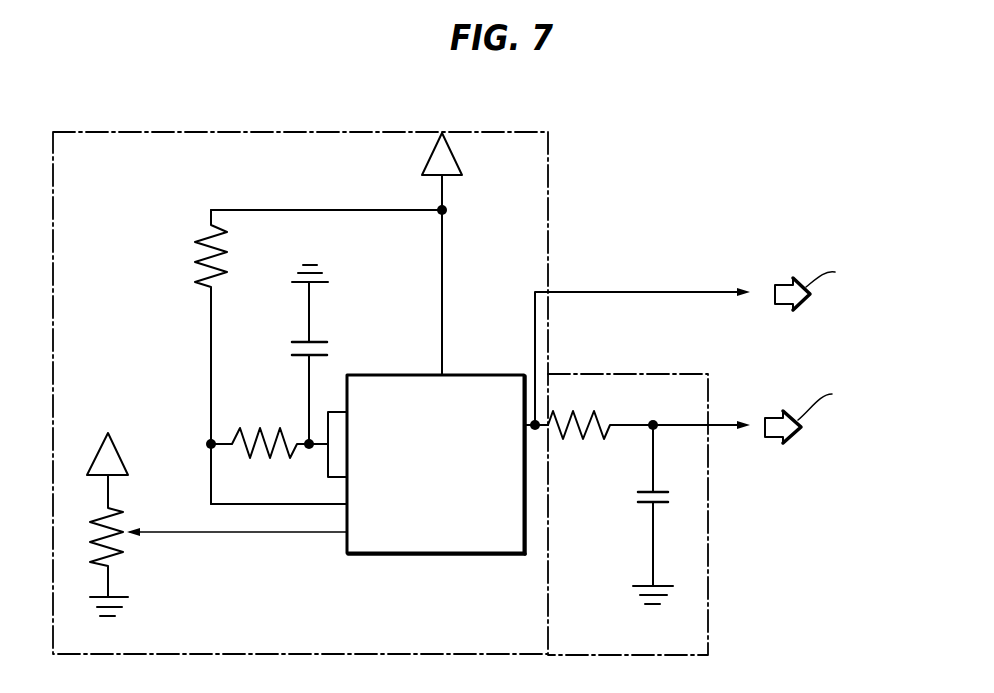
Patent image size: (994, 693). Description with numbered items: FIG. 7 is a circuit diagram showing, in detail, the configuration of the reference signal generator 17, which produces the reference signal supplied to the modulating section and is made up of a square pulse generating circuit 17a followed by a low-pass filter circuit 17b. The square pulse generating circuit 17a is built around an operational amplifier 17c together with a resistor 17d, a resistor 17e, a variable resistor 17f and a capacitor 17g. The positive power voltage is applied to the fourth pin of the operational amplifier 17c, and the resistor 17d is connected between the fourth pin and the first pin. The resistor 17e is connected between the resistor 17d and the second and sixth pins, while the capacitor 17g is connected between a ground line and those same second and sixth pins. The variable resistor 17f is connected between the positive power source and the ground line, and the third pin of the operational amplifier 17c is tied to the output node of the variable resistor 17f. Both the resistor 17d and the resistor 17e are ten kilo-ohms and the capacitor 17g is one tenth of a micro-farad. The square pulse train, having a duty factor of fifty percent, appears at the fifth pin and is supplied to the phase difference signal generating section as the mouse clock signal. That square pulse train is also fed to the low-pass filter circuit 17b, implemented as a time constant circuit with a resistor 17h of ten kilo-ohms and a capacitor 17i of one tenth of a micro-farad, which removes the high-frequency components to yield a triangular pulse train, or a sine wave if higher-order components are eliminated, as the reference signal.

The reference signal generator 17 is at (595, 157).
The square pulse generating circuit 17a is at (320, 132).
The low-pass filter circuit 17b is at (595, 374).
The operational amplifier 17c is at (486, 374).
The resistor 17d is at (202, 240).
The resistor 17e is at (258, 428).
The variable resistor 17f is at (120, 508).
The capacitor 17g is at (318, 342).
The resistor 17h is at (600, 430).
The capacitor 17i is at (652, 505).